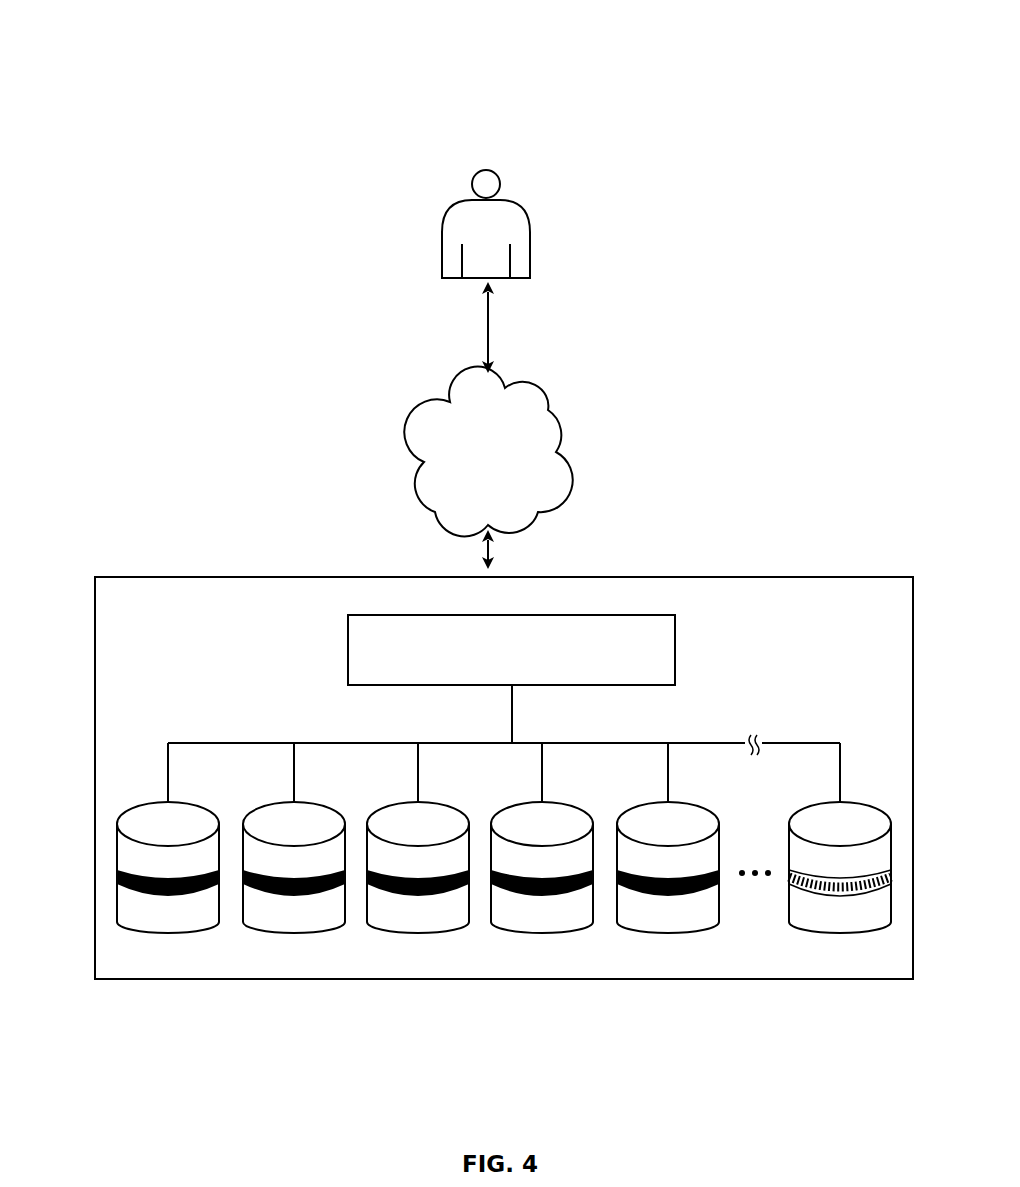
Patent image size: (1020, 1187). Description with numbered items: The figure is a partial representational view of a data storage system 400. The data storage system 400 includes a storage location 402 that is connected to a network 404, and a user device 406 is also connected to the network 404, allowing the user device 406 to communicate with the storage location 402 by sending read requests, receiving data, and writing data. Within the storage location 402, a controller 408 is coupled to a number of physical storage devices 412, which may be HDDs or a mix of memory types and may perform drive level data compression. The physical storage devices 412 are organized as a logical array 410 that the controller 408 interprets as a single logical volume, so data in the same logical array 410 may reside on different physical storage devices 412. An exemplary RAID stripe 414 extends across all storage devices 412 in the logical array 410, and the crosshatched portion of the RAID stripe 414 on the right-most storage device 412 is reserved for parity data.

The data storage system 400 is at (110, 58).
The storage location 402 is at (700, 577).
The network 404 is at (488, 452).
The user device 406 is at (555, 226).
The controller 408 is at (380, 615).
The logical array 410 is at (895, 777).
The physical storage devices 412 is at (138, 931).
The RAID stripe 414 is at (270, 905).